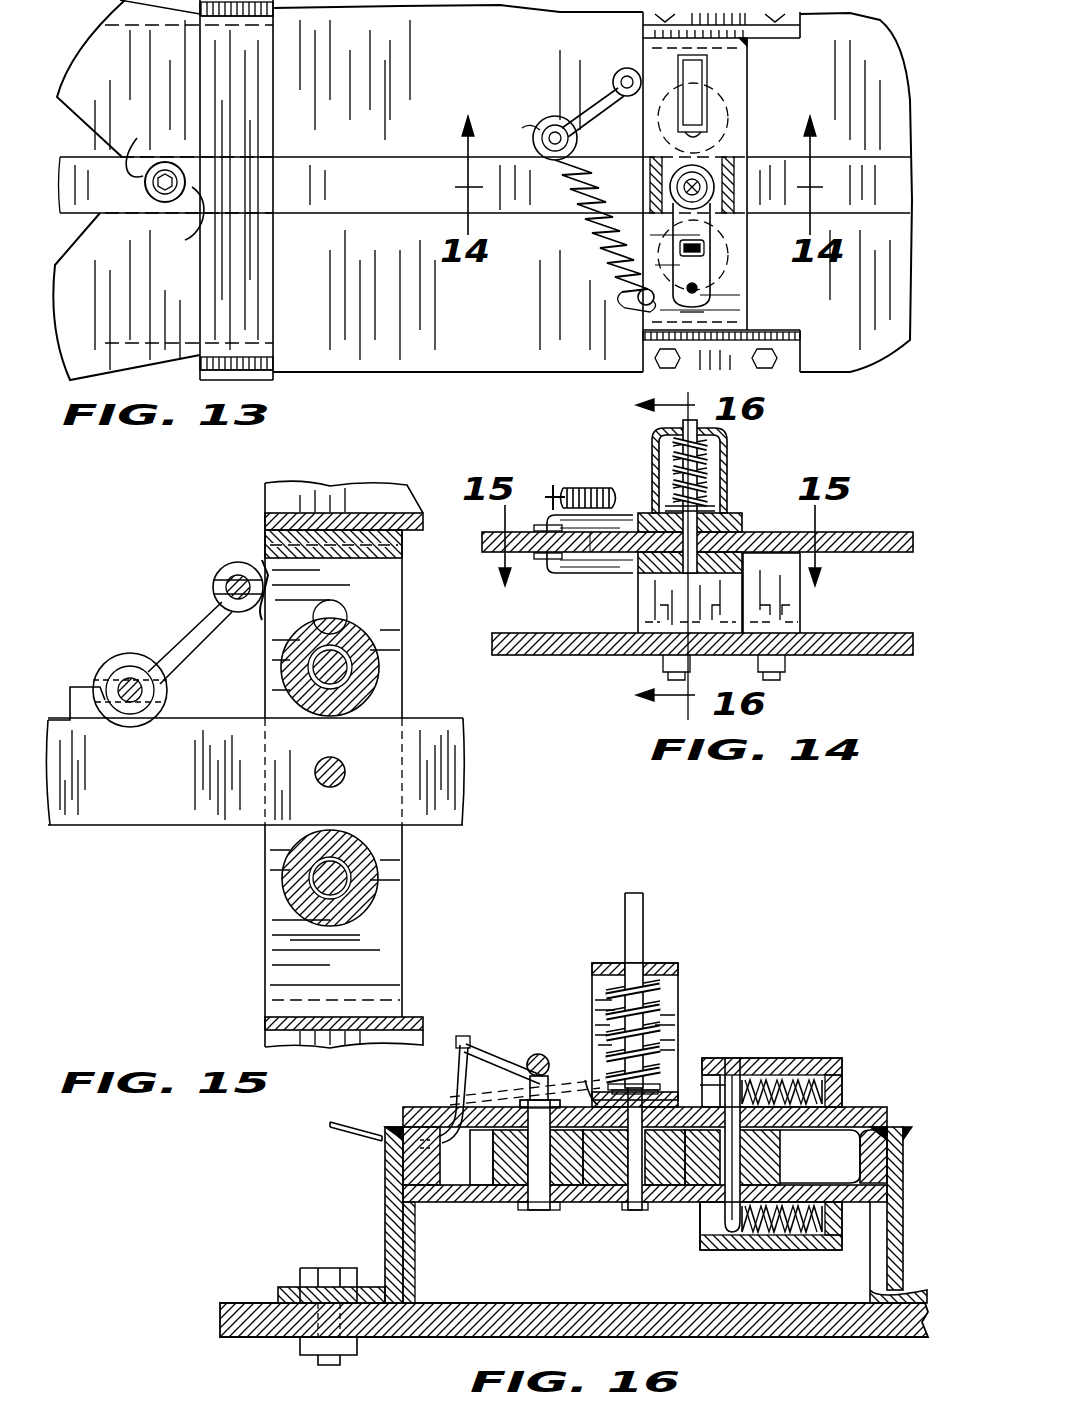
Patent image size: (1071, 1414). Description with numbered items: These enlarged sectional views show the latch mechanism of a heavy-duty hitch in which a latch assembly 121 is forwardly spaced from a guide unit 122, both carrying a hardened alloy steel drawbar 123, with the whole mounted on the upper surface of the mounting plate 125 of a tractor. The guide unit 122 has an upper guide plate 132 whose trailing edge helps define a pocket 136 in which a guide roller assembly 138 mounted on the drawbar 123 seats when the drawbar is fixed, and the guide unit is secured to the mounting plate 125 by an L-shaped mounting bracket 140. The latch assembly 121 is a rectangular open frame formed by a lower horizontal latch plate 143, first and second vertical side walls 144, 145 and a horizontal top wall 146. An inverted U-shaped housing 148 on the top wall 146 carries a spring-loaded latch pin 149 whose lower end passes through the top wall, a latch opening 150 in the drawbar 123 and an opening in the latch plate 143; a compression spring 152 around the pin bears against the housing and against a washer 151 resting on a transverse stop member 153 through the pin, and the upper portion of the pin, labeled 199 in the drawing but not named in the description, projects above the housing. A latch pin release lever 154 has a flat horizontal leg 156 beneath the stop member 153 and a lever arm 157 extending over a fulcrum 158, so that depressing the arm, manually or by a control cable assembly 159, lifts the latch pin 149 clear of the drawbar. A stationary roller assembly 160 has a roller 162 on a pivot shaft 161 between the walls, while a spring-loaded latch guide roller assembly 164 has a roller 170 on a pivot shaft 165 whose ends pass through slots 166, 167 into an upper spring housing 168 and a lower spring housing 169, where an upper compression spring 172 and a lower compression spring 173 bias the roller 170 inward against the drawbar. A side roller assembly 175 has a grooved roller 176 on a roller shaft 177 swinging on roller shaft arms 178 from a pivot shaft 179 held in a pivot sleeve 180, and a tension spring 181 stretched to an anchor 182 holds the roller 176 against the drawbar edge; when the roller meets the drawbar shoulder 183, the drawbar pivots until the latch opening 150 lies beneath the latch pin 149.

In FIG. 16, the latch assembly 121 is at (352, 1205).
In FIG. 13, the guide unit 122 is at (281, 76).
In FIG. 13, the drawbar 123 is at (872, 172).
In FIG. 14, the drawbar 123 is at (890, 533).
In FIG. 15, the drawbar 123 is at (170, 820).
In FIG. 16, the drawbar 123 is at (598, 1205).
In FIG. 16, the mounting plate 125 is at (735, 1340).
In FIG. 13, the upper guide plate 132 is at (262, 150).
In FIG. 13, the pocket 136 is at (165, 196).
In FIG. 13, the guide roller assembly 138 is at (140, 140).
In FIG. 13, the L-shaped mounting bracket 140 is at (275, 362).
In FIG. 16, the lower horizontal latch plate 143 is at (450, 1210).
In FIG. 16, the first vertical side wall 144 is at (400, 1152).
In FIG. 16, the second vertical side wall 145 is at (905, 1135).
In FIG. 13, the top wall 146 is at (733, 313).
In FIG. 14, the top wall 146 is at (728, 515).
In FIG. 15, the top wall 146 is at (280, 957).
In FIG. 16, the top wall 146 is at (852, 1106).
In FIG. 14, the U-shaped housing 148 is at (730, 462).
In FIG. 16, the U-shaped housing 148 is at (660, 962).
In FIG. 15, the latch pin 149 is at (345, 755).
In FIG. 16, the latch pin 149 is at (652, 1000).
In FIG. 15, the latch opening 150 is at (328, 788).
In FIG. 16, the latch opening 150 is at (665, 1205).
In FIG. 16, the washer 151 is at (662, 1046).
In FIG. 14, the compression spring 152 is at (668, 468).
In FIG. 16, the compression spring 152 is at (678, 1025).
In FIG. 16, the transverse stop member 153 is at (660, 1077).
In FIG. 13, the latch pin release lever 154 is at (700, 290).
In FIG. 16, the latch pin release lever 154 is at (455, 1097).
In FIG. 16, the horizontal leg 156 is at (592, 1060).
In FIG. 16, the lever arm 157 is at (468, 1044).
In FIG. 16, the fulcrum 158 is at (508, 1072).
In FIG. 16, the control cable assembly 159 is at (362, 1115).
In FIG. 13, the stationary roller assembly 160 is at (750, 262).
In FIG. 16, the stationary roller assembly 160 is at (512, 1218).
In FIG. 15, the pivot shaft 161 is at (318, 878).
In FIG. 16, the pivot shaft 161 is at (540, 1215).
In FIG. 15, the roller 162 is at (380, 900).
In FIG. 16, the roller 162 is at (490, 1150).
In FIG. 13, the spring-loaded latch guide roller assembly 164 is at (732, 113).
In FIG. 16, the spring-loaded latch guide roller assembly 164 is at (792, 1050).
In FIG. 13, the pivot shaft 165 is at (692, 187).
In FIG. 15, the pivot shaft 165 is at (345, 678).
In FIG. 16, the pivot shaft 165 is at (730, 1238).
In FIG. 15, the slot 166 is at (348, 612).
In FIG. 16, the slot 166 is at (785, 1125).
In FIG. 16, the slot 167 is at (795, 1252).
In FIG. 13, the upper spring housing 168 is at (706, 72).
In FIG. 16, the upper spring housing 168 is at (845, 1080).
In FIG. 16, the lower spring housing 169 is at (773, 1250).
In FIG. 13, the roller 170 is at (716, 100).
In FIG. 15, the roller 170 is at (378, 652).
In FIG. 16, the roller 170 is at (760, 1160).
In FIG. 16, the upper compression spring 172 is at (800, 1056).
In FIG. 16, the lower compression spring 173 is at (760, 1250).
In FIG. 15, the side roller assembly 175 is at (105, 650).
In FIG. 13, the grooved roller 176 is at (555, 138).
In FIG. 15, the grooved roller 176 is at (130, 655).
In FIG. 15, the roller shaft 177 is at (128, 702).
In FIG. 13, the roller shaft arm 178 is at (588, 110).
In FIG. 15, the roller shaft arm 178 is at (205, 638).
In FIG. 15, the pivot shaft 179 is at (224, 578).
In FIG. 13, the pivot sleeve 180 is at (622, 68).
In FIG. 15, the pivot sleeve 180 is at (238, 560).
In FIG. 13, the tension spring 181 is at (590, 255).
In FIG. 14, the tension spring 181 is at (590, 486).
In FIG. 13, the anchor 182 is at (630, 314).
In FIG. 13, the shoulder 183 is at (522, 128).
In FIG. 15, the shoulder 183 is at (85, 825).
In FIG. 16, the rod 199 is at (648, 920).